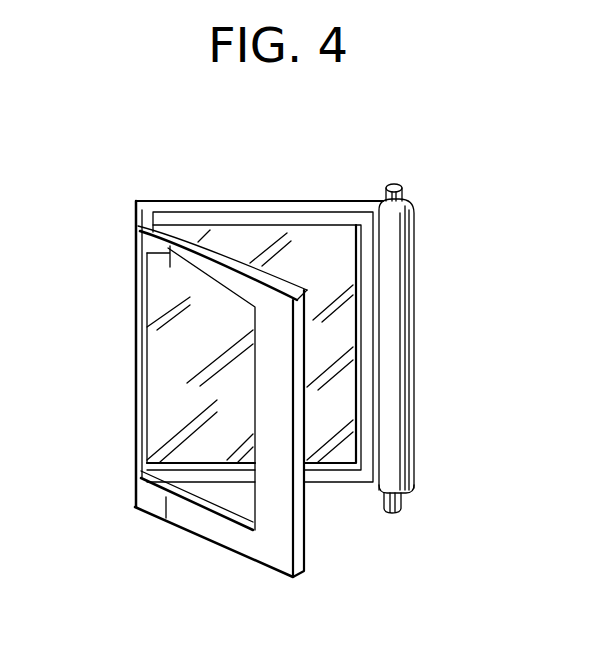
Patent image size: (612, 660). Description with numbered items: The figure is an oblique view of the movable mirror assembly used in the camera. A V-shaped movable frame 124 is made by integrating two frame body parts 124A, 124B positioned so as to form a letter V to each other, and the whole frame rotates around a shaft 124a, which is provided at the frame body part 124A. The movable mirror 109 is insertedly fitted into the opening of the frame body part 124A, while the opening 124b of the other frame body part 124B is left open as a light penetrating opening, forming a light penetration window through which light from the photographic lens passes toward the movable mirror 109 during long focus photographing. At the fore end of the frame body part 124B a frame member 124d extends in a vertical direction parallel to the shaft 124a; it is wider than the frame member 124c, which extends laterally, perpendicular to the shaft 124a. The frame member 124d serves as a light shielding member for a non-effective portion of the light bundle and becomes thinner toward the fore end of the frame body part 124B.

The movable frame 124 is at (287, 200).
The movable mirror 109 is at (241, 237).
The frame body part 124A is at (330, 201).
The shaft 124a is at (397, 183).
The frame body part 124B is at (181, 246).
The frame member 124c is at (187, 271).
The opening 124b is at (227, 495).
The frame member 124d is at (278, 542).